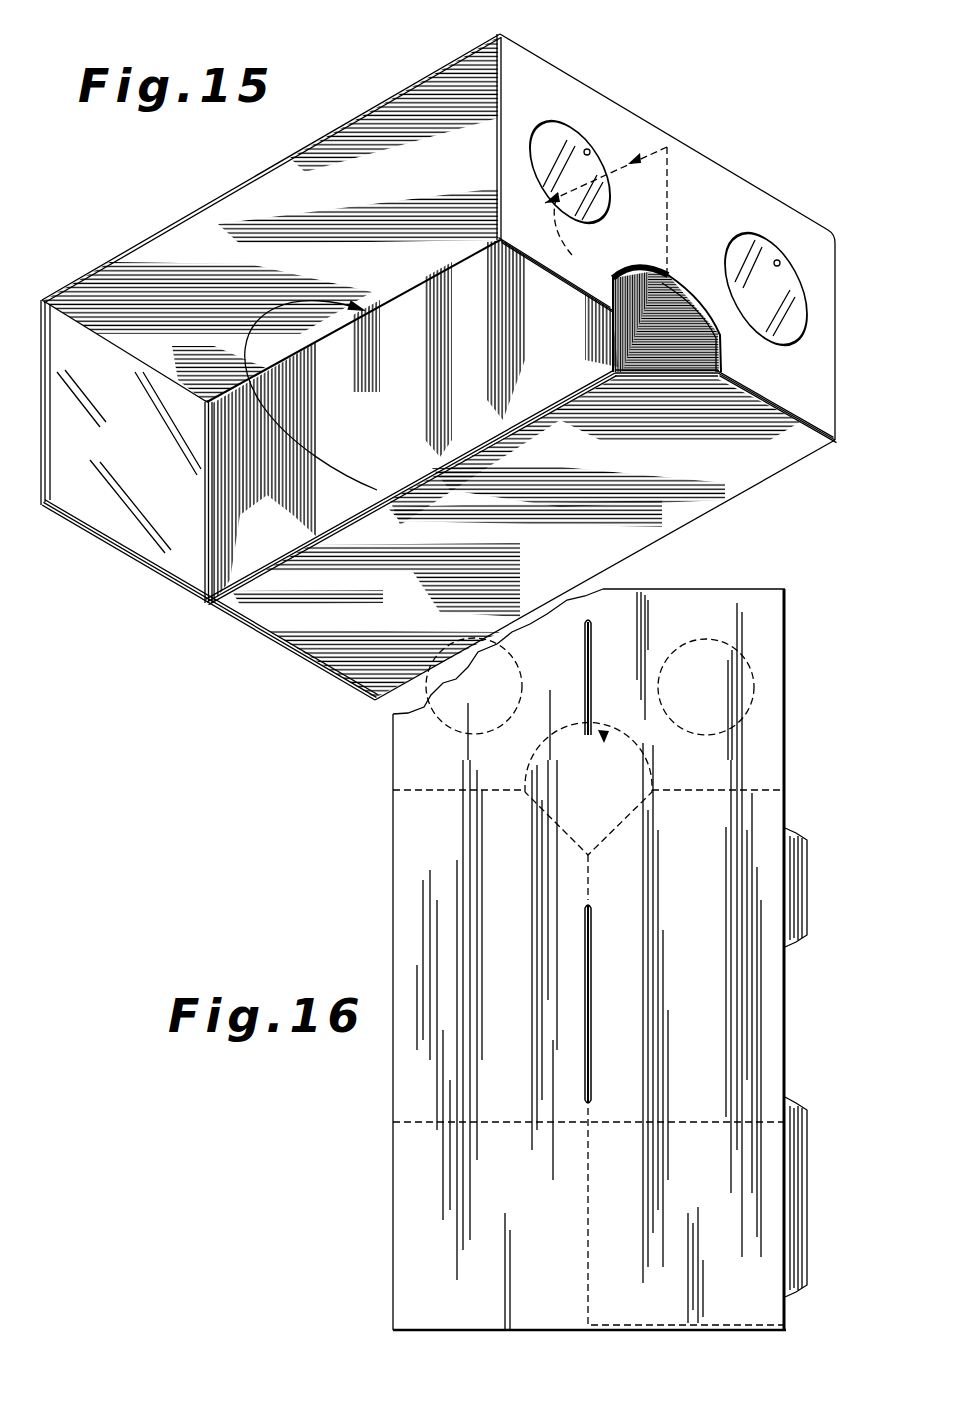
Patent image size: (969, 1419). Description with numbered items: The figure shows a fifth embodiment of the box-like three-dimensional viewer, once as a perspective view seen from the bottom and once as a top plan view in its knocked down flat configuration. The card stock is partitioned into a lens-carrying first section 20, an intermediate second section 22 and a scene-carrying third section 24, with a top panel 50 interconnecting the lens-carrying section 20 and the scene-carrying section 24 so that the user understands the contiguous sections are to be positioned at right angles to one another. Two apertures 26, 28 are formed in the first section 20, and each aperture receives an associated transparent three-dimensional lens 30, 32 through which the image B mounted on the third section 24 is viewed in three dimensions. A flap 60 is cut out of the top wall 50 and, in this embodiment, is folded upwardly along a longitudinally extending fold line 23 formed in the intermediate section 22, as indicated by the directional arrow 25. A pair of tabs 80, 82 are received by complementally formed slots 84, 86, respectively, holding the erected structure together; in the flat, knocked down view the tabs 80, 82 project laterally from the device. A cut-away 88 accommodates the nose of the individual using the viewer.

In FIG. 15, the first section 20 is at (712, 180).
In FIG. 16, the first section 20 is at (757, 622).
In FIG. 15, the second section 22 is at (717, 453).
In FIG. 15, the fold line 23 is at (283, 563).
In FIG. 16, the fold line 23 is at (590, 881).
In FIG. 15, the third section 24 is at (78, 530).
In FIG. 16, the third section 24 is at (410, 1238).
In FIG. 15, the directional arrow 25 is at (303, 455).
In FIG. 15, the aperture 26 is at (592, 150).
In FIG. 15, the aperture 28 is at (779, 262).
In FIG. 15, the 3-D lens 30 is at (552, 137).
In FIG. 16, the 3-D lens 30 is at (430, 712).
In FIG. 15, the 3-D lens 32 is at (752, 240).
In FIG. 16, the 3-D lens 32 is at (735, 688).
In FIG. 15, the top panel 50 is at (227, 197).
In FIG. 16, the top panel 50 is at (402, 905).
In FIG. 15, the flap 60 is at (245, 520).
In FIG. 16, the flap 60 is at (425, 1069).
In FIG. 15, the tab 80 is at (574, 236).
In FIG. 16, the tab 80 is at (803, 893).
In FIG. 15, the tab 82 is at (240, 390).
In FIG. 16, the tab 82 is at (795, 1203).
In FIG. 15, the slot 84 is at (634, 157).
In FIG. 16, the slot 84 is at (590, 636).
In FIG. 15, the slot 86 is at (368, 310).
In FIG. 16, the slot 86 is at (591, 986).
In FIG. 15, the cut-away 88 is at (677, 283).
In FIG. 16, the cut-away 88 is at (605, 738).
In FIG. 15, the image B is at (160, 482).